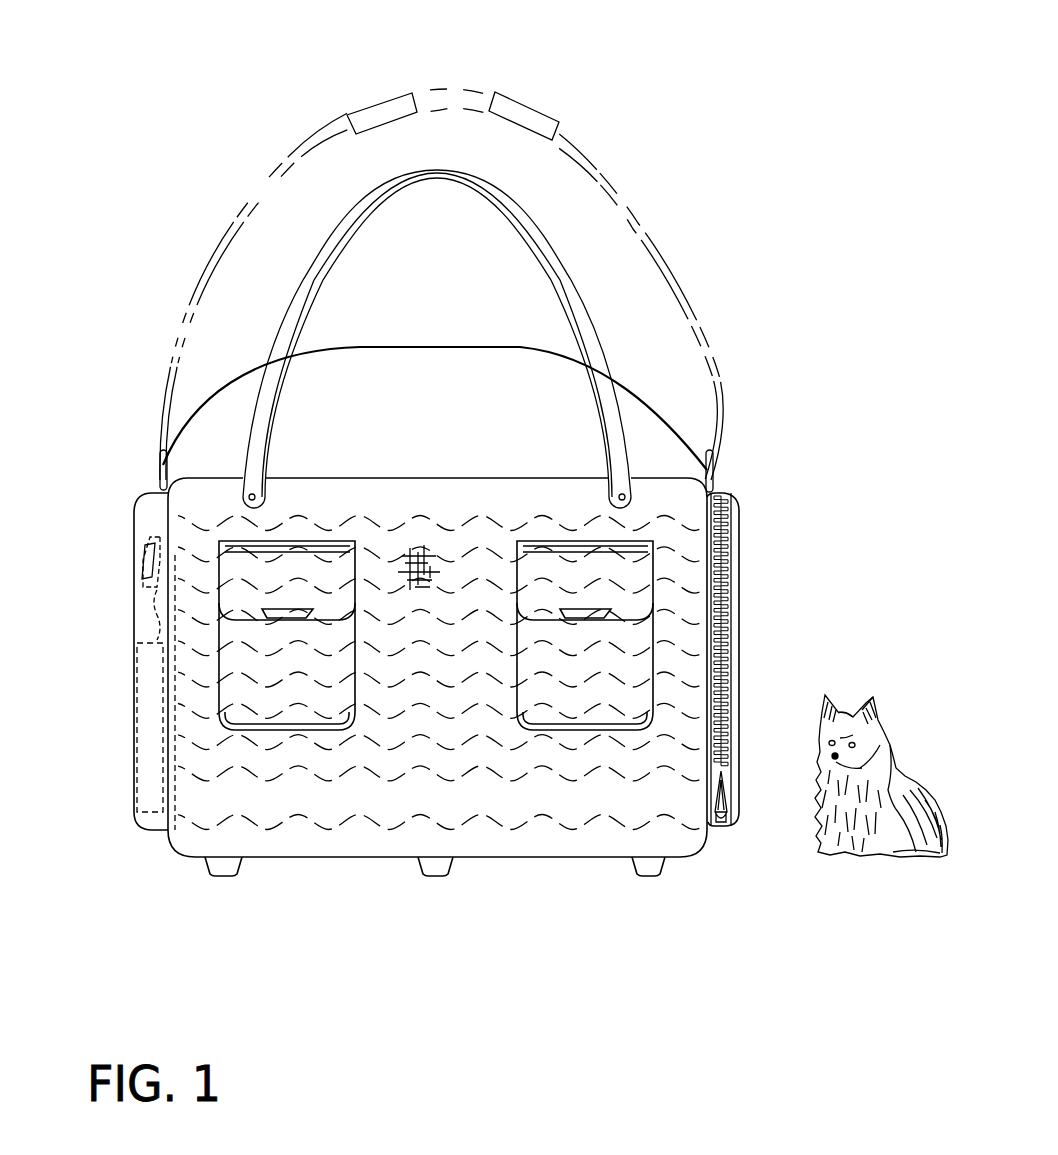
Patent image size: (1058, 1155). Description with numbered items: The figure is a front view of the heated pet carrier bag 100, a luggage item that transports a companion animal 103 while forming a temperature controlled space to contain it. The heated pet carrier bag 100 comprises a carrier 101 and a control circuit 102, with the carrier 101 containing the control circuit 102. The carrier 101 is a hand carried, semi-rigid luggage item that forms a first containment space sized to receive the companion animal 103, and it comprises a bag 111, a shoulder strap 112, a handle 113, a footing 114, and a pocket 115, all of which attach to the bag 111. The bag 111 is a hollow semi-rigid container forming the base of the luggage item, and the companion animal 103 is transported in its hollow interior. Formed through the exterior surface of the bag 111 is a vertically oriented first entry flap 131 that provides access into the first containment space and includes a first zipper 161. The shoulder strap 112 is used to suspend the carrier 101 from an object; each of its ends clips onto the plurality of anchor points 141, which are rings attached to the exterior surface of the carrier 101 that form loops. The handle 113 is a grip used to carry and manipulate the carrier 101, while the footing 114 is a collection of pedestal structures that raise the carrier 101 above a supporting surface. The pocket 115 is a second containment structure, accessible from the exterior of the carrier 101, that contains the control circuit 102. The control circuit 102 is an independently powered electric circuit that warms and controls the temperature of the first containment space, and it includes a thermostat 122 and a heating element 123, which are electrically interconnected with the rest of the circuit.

The heated pet carrier bag 100 is at (170, 93).
The carrier 101 is at (430, 520).
The control circuit 102 is at (148, 683).
The companion animal 103 is at (893, 733).
The bag 111 is at (197, 493).
The shoulder strap 112 is at (640, 216).
The handle 113 is at (563, 301).
The footing 114 is at (650, 876).
The pocket 115 is at (115, 565).
The thermostat 122 is at (143, 557).
The heating element 123 is at (373, 770).
The first entry flap 131 is at (740, 527).
The plurality of anchor points 141 is at (475, 348).
The first zipper 161 is at (713, 533).